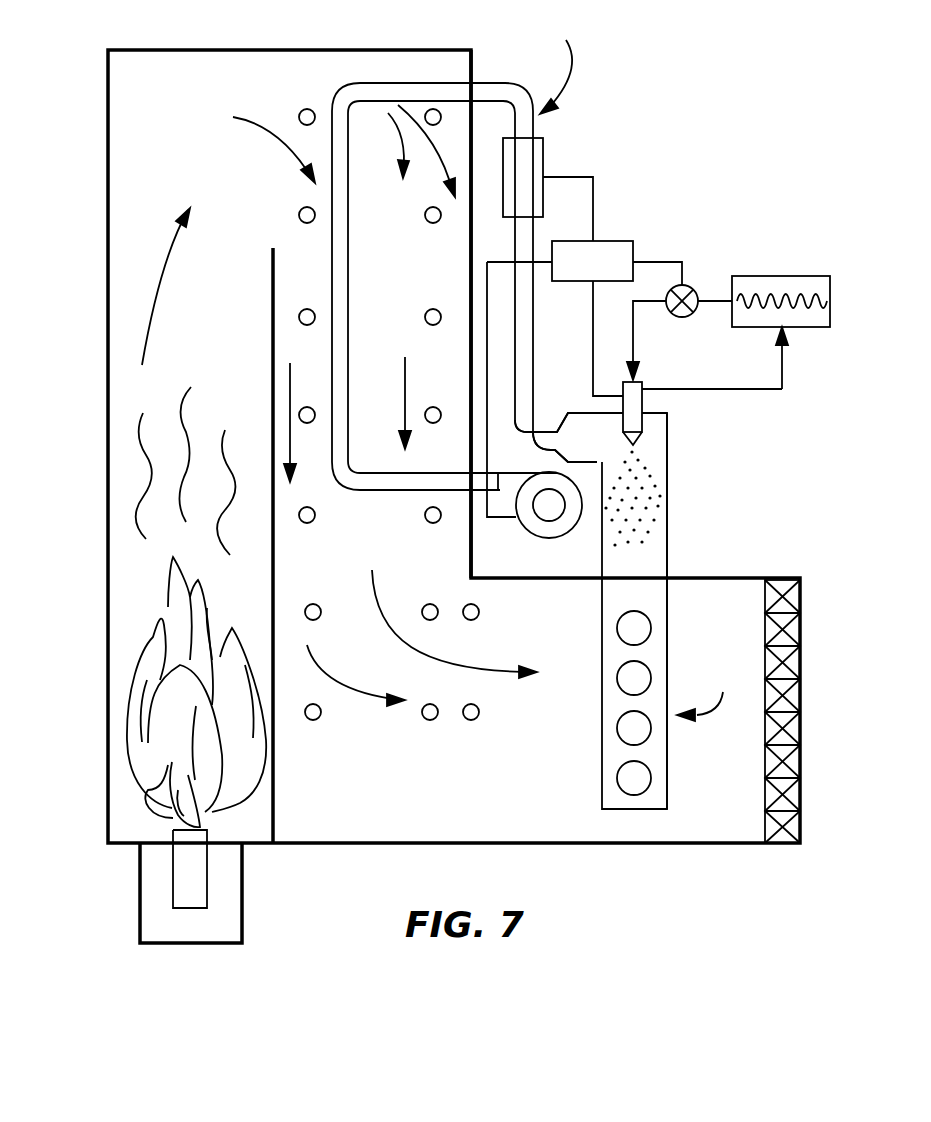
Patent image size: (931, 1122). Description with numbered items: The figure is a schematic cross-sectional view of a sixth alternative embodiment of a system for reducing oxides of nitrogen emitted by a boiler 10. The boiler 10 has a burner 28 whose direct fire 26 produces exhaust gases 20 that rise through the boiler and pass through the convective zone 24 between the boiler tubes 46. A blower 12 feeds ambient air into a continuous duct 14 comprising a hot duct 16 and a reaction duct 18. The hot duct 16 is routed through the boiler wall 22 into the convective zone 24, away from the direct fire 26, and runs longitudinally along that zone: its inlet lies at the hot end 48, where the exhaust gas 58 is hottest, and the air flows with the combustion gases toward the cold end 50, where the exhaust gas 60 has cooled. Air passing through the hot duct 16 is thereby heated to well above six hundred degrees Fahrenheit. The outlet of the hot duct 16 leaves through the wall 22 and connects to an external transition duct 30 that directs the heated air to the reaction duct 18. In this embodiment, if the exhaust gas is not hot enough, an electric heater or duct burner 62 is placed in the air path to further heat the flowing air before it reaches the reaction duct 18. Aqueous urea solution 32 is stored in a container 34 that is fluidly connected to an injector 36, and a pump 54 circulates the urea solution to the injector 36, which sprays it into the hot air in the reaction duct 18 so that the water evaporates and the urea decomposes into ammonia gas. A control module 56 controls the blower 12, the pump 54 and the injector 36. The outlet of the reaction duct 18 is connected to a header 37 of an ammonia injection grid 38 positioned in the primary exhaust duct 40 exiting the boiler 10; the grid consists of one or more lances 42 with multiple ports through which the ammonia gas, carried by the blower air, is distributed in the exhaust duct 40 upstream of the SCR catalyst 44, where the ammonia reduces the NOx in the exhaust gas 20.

The boiler 10 is at (88, 410).
The blower 12 is at (547, 540).
The continuous duct 14 is at (553, 74).
The hot duct 16 is at (349, 265).
The reaction duct 18 is at (668, 482).
The exhaust gas 20 is at (186, 471).
The boiler wall 22 is at (473, 75).
The convective zone 24 is at (406, 289).
The direct fire 26 is at (191, 746).
The burner 28 is at (245, 868).
The transition duct 30 is at (563, 420).
The aqueous urea solution 32 is at (812, 318).
The container 34 is at (773, 277).
The injector 36 is at (643, 401).
The header 37 is at (668, 636).
The ammonia injection grid 38 is at (710, 695).
The primary exhaust duct 40 is at (728, 771).
The lances 42 is at (617, 630).
The SCR catalyst 44 is at (788, 662).
The boiler tubes 46 is at (308, 109).
The hot end 48 is at (383, 163).
The cold end 50 is at (406, 556).
The pump 54 is at (694, 290).
The control module 56 is at (612, 241).
The exhaust gas 58 is at (270, 118).
The exhaust gas 60 is at (290, 385).
The electric heater or duct burner 62 is at (545, 160).